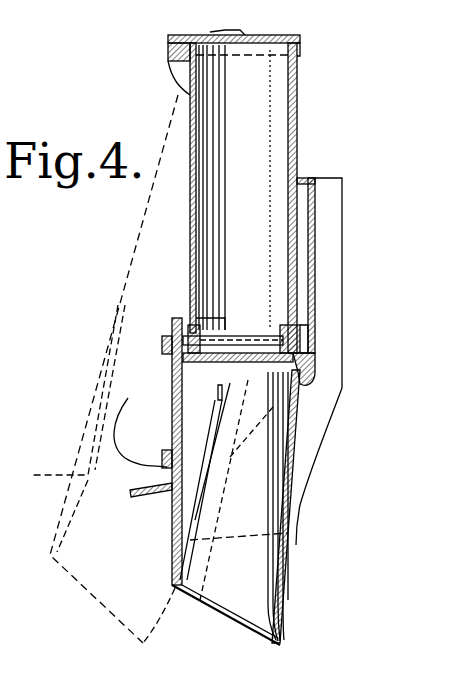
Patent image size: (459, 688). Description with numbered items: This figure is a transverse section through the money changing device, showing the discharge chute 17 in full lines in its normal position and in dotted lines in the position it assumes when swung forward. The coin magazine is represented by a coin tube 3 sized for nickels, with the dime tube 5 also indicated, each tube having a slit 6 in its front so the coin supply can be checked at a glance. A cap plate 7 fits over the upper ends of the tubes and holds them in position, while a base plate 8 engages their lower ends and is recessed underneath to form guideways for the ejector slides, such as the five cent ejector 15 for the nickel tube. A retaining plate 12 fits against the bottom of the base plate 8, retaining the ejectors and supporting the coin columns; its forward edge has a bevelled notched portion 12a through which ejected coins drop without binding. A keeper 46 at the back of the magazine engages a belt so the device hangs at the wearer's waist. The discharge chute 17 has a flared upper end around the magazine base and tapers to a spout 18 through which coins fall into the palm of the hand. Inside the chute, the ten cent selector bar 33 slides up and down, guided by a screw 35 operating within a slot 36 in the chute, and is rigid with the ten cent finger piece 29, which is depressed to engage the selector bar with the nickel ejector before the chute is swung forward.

The coin tube 3 is at (288, 106).
The slit 6 is at (173, 330).
The keeper 46 is at (315, 186).
The cap plate 7 is at (242, 300).
The coin tube 5 is at (232, 323).
The five cent ejector 15 is at (218, 330).
The base plate 8 is at (283, 327).
The retaining plate 12 is at (293, 382).
The notched portion 12a is at (223, 396).
The slot 36 is at (170, 368).
The screw 35 is at (165, 348).
The finger piece 29 is at (140, 499).
The discharge chute 17 is at (299, 522).
The spout 18 is at (243, 600).
The ten cent selector bar 33 is at (238, 452).